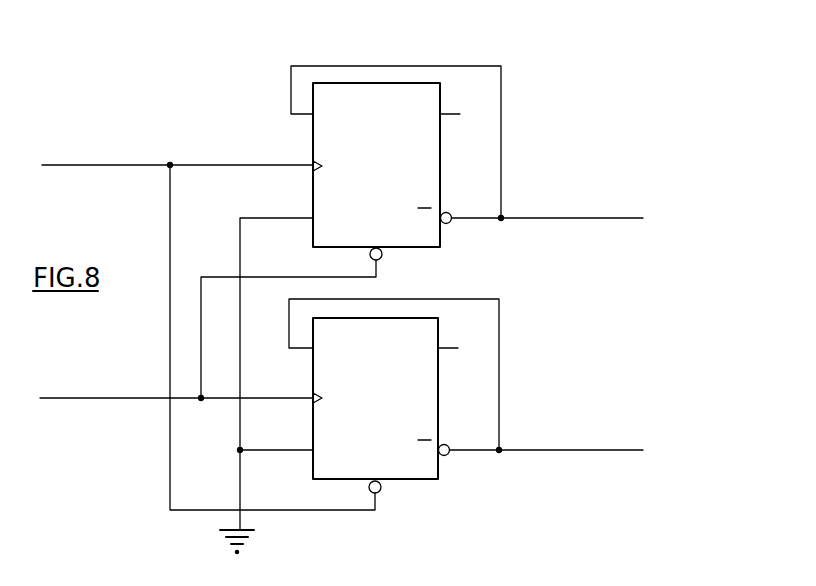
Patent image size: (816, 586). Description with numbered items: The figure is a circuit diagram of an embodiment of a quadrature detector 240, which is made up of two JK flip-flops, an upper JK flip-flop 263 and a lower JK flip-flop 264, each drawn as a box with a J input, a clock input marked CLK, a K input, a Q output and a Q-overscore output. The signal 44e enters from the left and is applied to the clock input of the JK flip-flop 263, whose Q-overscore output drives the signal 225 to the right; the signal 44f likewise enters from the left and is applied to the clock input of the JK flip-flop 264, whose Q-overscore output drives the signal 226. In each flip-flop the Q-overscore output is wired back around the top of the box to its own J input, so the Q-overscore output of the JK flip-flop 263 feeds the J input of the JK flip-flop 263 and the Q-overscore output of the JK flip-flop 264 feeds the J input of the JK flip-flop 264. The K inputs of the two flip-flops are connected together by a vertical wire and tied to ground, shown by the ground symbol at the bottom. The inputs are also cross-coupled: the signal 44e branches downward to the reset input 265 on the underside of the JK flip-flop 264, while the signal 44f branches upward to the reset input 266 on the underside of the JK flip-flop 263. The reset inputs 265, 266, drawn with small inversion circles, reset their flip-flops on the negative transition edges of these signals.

The quadrature detector 240 is at (452, 51).
The JK flip-flop 263 is at (312, 143).
The JK flip-flop 264 is at (312, 375).
The reset input 265 is at (378, 481).
The reset input 266 is at (378, 247).
The signal 225 is at (581, 219).
The signal 226 is at (580, 451).
The signal 44e is at (128, 163).
The signal 44f is at (126, 397).